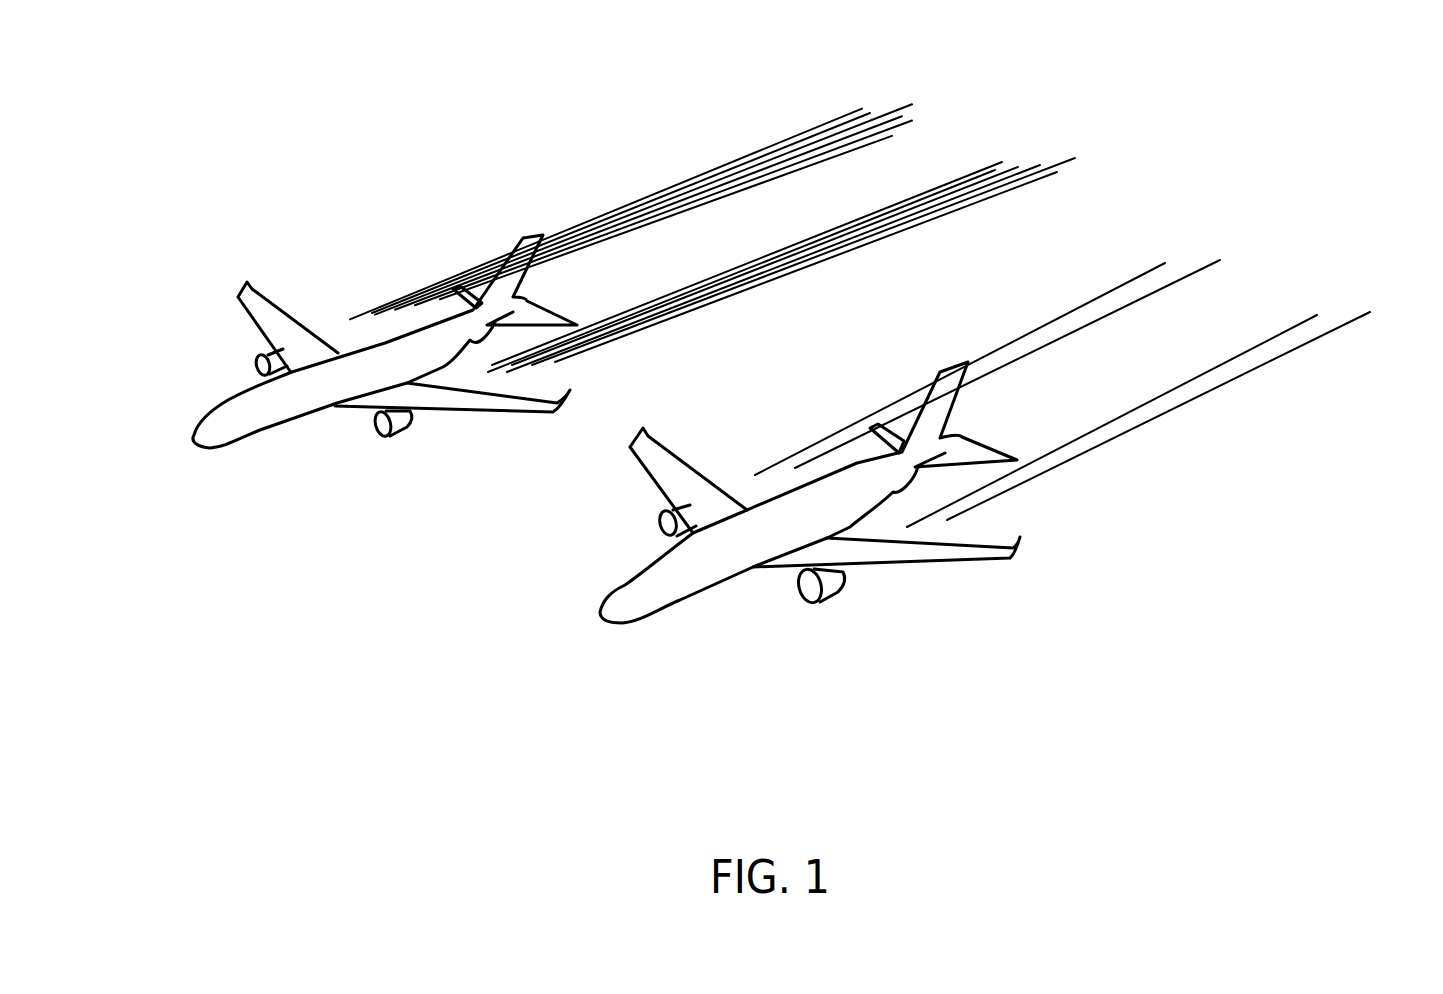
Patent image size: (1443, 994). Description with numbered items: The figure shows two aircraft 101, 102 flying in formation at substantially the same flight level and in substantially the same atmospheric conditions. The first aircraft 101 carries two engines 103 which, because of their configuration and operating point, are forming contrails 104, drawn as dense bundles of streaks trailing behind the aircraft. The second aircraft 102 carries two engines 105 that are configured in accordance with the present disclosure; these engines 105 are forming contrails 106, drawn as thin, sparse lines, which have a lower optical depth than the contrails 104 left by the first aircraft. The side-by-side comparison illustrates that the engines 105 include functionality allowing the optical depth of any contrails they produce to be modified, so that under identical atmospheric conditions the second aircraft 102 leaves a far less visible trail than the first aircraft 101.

The aircraft 101 is at (316, 360).
The aircraft 102 is at (745, 505).
The engines 103 is at (304, 397).
The contrails 104 is at (923, 89).
The engines 105 is at (660, 513).
The contrails 106 is at (1208, 247).